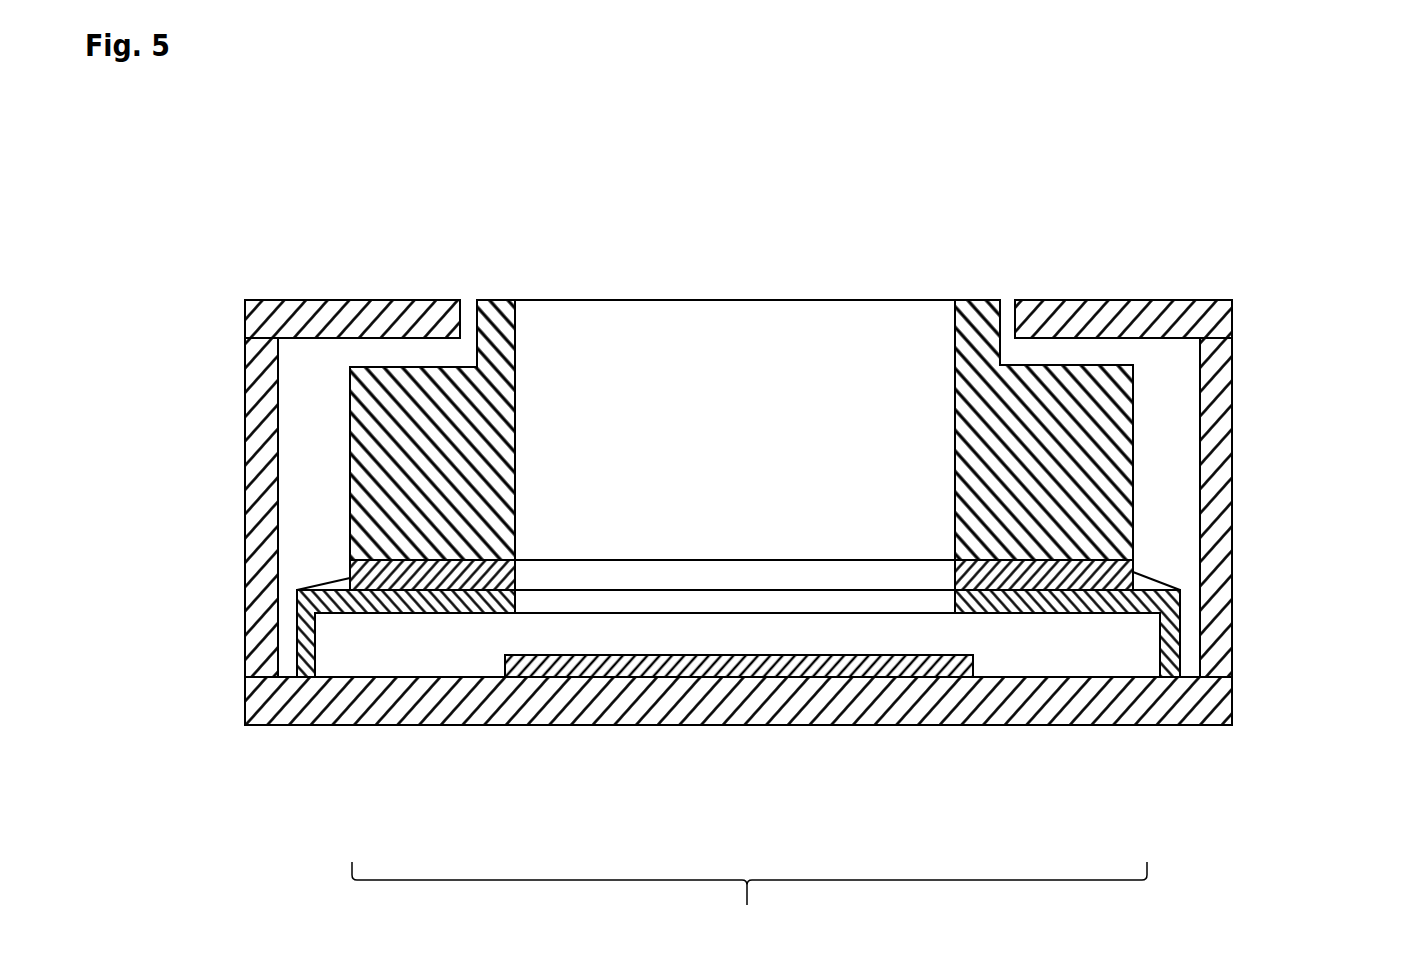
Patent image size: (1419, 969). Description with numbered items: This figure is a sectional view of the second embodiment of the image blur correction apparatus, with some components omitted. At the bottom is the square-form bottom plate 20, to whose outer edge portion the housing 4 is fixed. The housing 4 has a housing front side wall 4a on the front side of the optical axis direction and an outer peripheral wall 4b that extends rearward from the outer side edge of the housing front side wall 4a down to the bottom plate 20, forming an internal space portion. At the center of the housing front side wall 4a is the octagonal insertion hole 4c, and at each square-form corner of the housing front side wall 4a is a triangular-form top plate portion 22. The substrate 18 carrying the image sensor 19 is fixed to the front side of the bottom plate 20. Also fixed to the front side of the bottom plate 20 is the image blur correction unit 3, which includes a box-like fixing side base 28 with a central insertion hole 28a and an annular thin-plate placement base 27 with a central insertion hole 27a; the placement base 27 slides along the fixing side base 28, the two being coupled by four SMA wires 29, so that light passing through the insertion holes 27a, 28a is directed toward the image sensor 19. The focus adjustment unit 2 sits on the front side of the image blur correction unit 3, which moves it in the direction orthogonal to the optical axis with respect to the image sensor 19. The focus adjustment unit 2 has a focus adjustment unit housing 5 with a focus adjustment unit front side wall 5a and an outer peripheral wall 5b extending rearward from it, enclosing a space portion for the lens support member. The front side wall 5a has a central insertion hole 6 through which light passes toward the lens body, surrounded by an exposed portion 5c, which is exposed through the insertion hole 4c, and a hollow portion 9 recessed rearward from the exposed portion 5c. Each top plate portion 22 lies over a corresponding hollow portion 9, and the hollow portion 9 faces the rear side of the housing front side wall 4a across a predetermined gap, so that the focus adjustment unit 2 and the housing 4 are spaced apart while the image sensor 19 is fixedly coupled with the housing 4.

The focus adjustment unit 2 is at (750, 297).
The image blur correction unit 3 is at (749, 907).
The housing 4 is at (1257, 312).
The housing front side wall 4a is at (260, 297).
The outer peripheral wall 4b is at (1232, 423).
The insertion hole 4c is at (467, 300).
The focus adjustment unit housing 5 is at (1137, 505).
The focus adjustment unit front side wall 5a is at (507, 298).
The outer peripheral wall 5b is at (352, 432).
The exposed portion 5c is at (487, 297).
The insertion hole 6 is at (692, 365).
The hollow portion 9 is at (393, 368).
The substrate 18 is at (739, 750).
The image sensor 19 is at (745, 665).
The bottom plate 20 is at (1228, 700).
The top plate portion 22 is at (325, 300).
The placement base 27 is at (993, 573).
The insertion hole 27a is at (600, 577).
The fixing side base 28 is at (1040, 603).
The insertion hole 28a is at (670, 598).
The SMA wires 29 is at (337, 580).